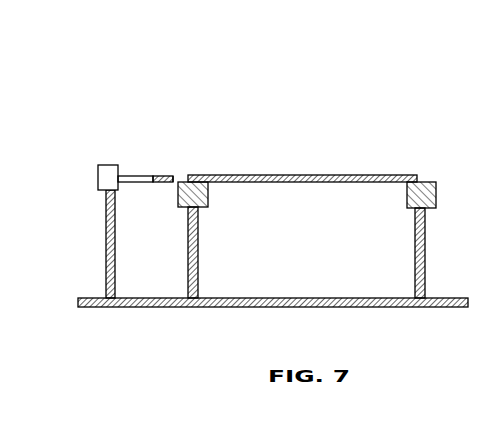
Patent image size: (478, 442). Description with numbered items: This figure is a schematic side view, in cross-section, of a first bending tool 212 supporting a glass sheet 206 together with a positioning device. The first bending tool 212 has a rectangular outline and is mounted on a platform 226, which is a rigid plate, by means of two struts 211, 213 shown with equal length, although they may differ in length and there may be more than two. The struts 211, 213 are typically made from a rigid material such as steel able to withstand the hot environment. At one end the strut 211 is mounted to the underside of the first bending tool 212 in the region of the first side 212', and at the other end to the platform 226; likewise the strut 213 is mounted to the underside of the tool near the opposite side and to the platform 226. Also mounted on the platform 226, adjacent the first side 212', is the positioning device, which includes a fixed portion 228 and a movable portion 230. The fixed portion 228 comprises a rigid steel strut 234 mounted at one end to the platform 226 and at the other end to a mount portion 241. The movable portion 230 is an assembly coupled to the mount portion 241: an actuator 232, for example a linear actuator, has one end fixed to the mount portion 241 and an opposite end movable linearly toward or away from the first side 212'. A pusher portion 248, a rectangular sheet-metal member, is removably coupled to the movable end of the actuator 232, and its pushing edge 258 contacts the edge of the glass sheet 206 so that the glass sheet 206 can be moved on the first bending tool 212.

The glass sheet 206 is at (300, 175).
The strut 211 is at (198, 262).
The first bending tool 212 is at (344, 213).
The first side 212' is at (170, 219).
The strut 213 is at (415, 265).
The platform 226 is at (90, 298).
The fixed portion 228 is at (75, 162).
The movable portion 230 is at (115, 95).
The actuator 232 is at (57, 58).
The rigid strut 234 is at (107, 232).
The mount portion 241 is at (107, 172).
The pusher portion 248 is at (168, 176).
The pushing edge 258 is at (181, 177).